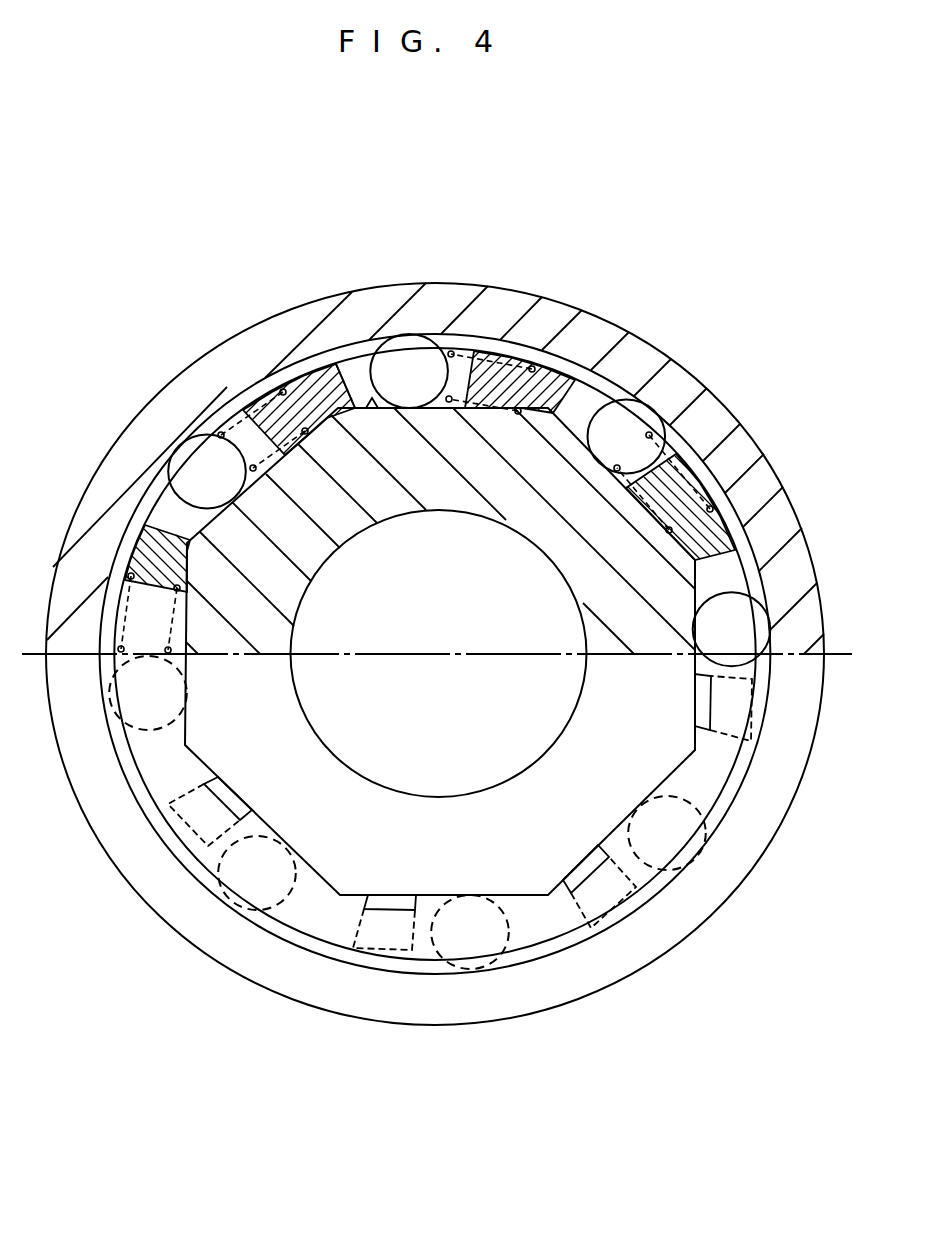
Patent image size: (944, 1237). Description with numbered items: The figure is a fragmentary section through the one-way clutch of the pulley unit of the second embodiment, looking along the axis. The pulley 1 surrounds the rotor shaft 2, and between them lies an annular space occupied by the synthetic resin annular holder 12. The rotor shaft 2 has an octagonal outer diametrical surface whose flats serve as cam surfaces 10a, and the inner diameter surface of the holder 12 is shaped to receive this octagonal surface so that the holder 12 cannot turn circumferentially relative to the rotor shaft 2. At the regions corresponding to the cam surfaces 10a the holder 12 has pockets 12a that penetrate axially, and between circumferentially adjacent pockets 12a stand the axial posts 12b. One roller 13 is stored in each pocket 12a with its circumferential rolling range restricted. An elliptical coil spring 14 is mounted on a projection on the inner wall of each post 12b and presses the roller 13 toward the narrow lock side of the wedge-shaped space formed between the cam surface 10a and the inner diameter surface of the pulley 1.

The pulley 1 is at (733, 442).
The rotor shaft 2 is at (572, 556).
The cam surface 10a is at (374, 408).
The holder 12 is at (293, 372).
The pocket 12a is at (363, 378).
The post 12b is at (537, 383).
The roller 13 is at (408, 368).
The coil spring 14 is at (453, 352).